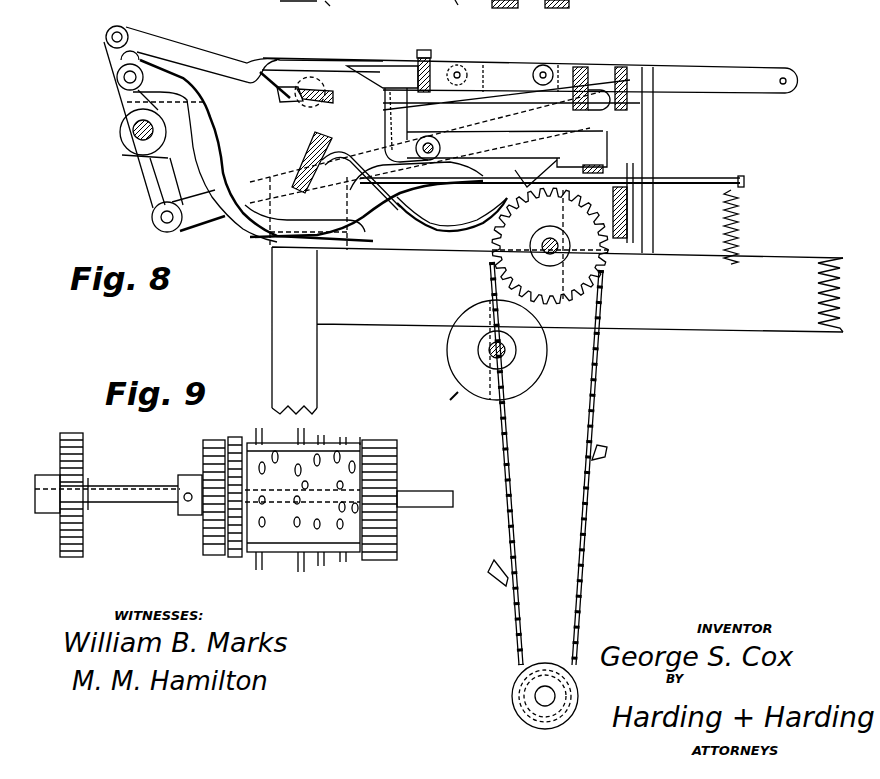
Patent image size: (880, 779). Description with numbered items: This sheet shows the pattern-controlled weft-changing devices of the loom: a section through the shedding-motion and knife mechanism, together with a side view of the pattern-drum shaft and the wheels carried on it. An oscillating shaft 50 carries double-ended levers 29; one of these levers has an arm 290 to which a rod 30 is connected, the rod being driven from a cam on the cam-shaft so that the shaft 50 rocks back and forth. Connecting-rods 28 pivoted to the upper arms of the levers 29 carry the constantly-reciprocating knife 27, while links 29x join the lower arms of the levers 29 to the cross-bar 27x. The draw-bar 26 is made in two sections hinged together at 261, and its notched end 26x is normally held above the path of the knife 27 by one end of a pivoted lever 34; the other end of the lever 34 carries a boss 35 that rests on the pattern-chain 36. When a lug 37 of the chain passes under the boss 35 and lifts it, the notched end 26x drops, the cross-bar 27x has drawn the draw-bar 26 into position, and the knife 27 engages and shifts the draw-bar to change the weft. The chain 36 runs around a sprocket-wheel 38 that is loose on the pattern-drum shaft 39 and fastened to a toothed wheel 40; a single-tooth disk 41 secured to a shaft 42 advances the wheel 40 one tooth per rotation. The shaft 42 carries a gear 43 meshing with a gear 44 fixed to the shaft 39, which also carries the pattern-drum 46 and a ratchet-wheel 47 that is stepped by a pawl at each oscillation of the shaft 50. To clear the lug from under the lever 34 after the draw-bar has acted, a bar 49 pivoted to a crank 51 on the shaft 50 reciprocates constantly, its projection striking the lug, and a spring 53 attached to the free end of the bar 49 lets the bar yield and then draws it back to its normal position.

In FIG. 8, the draw-bar 26 is at (753, 75).
In FIG. 8, the notched end of draw-bar 26x is at (387, 77).
In FIG. 8, the hinge 261 is at (548, 68).
In FIG. 8, the knife 27 is at (303, 105).
In FIG. 8, the cross-bar 27x is at (588, 67).
In FIG. 8, the connecting-rod 28 is at (207, 58).
In FIG. 8, the double-ended lever 29 is at (147, 193).
In FIG. 8, the link 29x is at (188, 223).
In FIG. 8, the arm 290 is at (277, 11).
In FIG. 8, the rod 30 is at (341, 10).
In FIG. 8, the pivoted lever 34 is at (463, 152).
In FIG. 8, the boss 35 is at (560, 175).
In FIG. 8, the pattern-chain 36 is at (600, 387).
In FIG. 8, the lug 37 is at (608, 448).
In FIG. 9, the sprocket-wheel 38 is at (236, 558).
In FIG. 8, the pattern-drum shaft 39 is at (560, 255).
In FIG. 9, the pattern-drum shaft 39 is at (143, 503).
In FIG. 8, the toothed wheel 40 is at (551, 246).
In FIG. 9, the toothed wheel 40 is at (210, 557).
In FIG. 8, the disk 41 is at (460, 367).
In FIG. 8, the shaft 42 is at (490, 349).
In FIG. 8, the gear 43 is at (448, 7).
In FIG. 8, the gear 44 is at (498, 10).
In FIG. 9, the gear 44 is at (72, 558).
In FIG. 9, the pattern-drum 46 is at (306, 560).
In FIG. 9, the ratchet-wheel 47 is at (383, 565).
In FIG. 8, the bar 49 is at (245, 228).
In FIG. 8, the shaft 50 is at (135, 135).
In FIG. 8, the crank 51 is at (125, 100).
In FIG. 8, the spring 53 is at (740, 222).